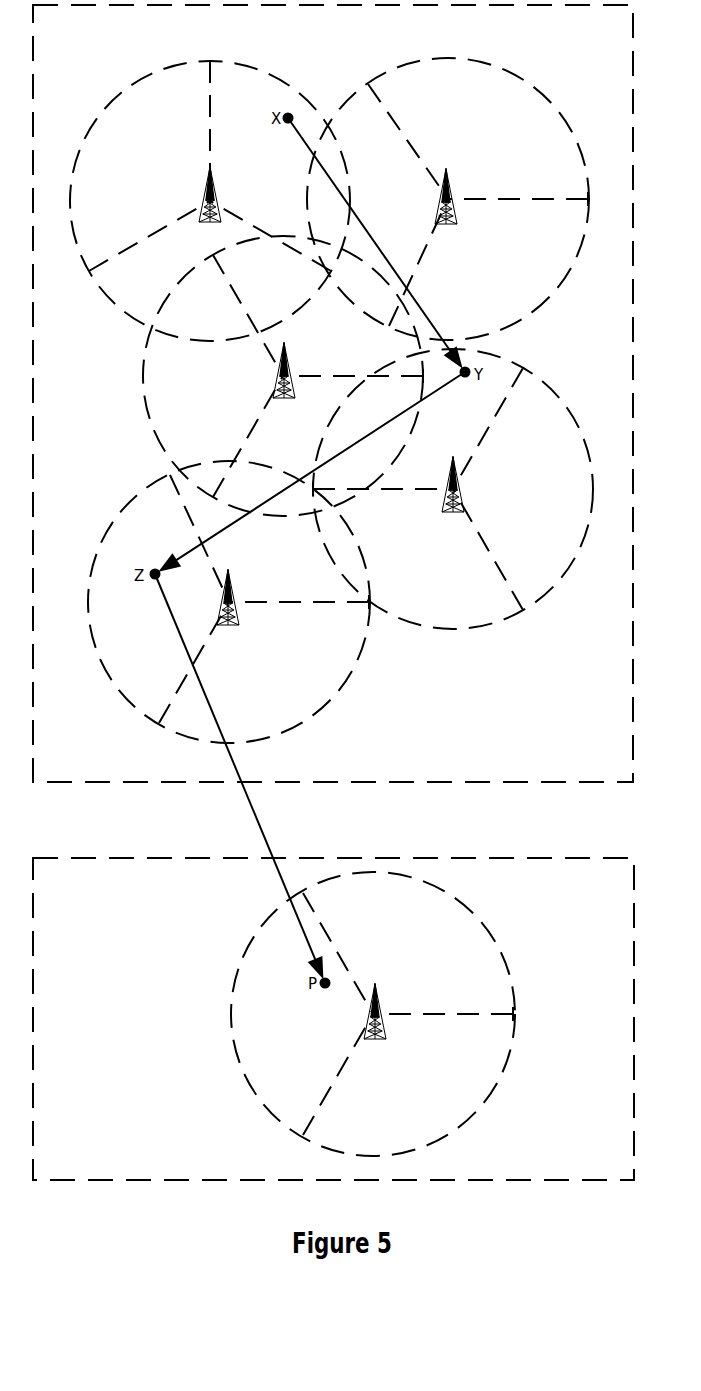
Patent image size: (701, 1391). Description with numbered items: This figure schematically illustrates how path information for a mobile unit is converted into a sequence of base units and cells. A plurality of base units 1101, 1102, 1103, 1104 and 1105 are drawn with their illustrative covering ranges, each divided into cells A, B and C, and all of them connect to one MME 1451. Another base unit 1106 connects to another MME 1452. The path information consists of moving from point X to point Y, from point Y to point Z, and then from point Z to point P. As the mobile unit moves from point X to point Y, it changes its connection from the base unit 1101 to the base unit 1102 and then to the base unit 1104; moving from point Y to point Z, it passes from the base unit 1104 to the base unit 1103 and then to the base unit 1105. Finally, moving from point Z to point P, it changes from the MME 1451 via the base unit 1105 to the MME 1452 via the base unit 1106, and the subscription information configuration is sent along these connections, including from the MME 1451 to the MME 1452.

The MME 1451 is at (333, 393).
The MME 1452 is at (333, 1019).
The base unit 1101 is at (200, 203).
The base unit 1102 is at (436, 206).
The base unit 1103 is at (274, 381).
The base unit 1104 is at (446, 479).
The base unit 1105 is at (235, 597).
The base unit 1106 is at (364, 1021).